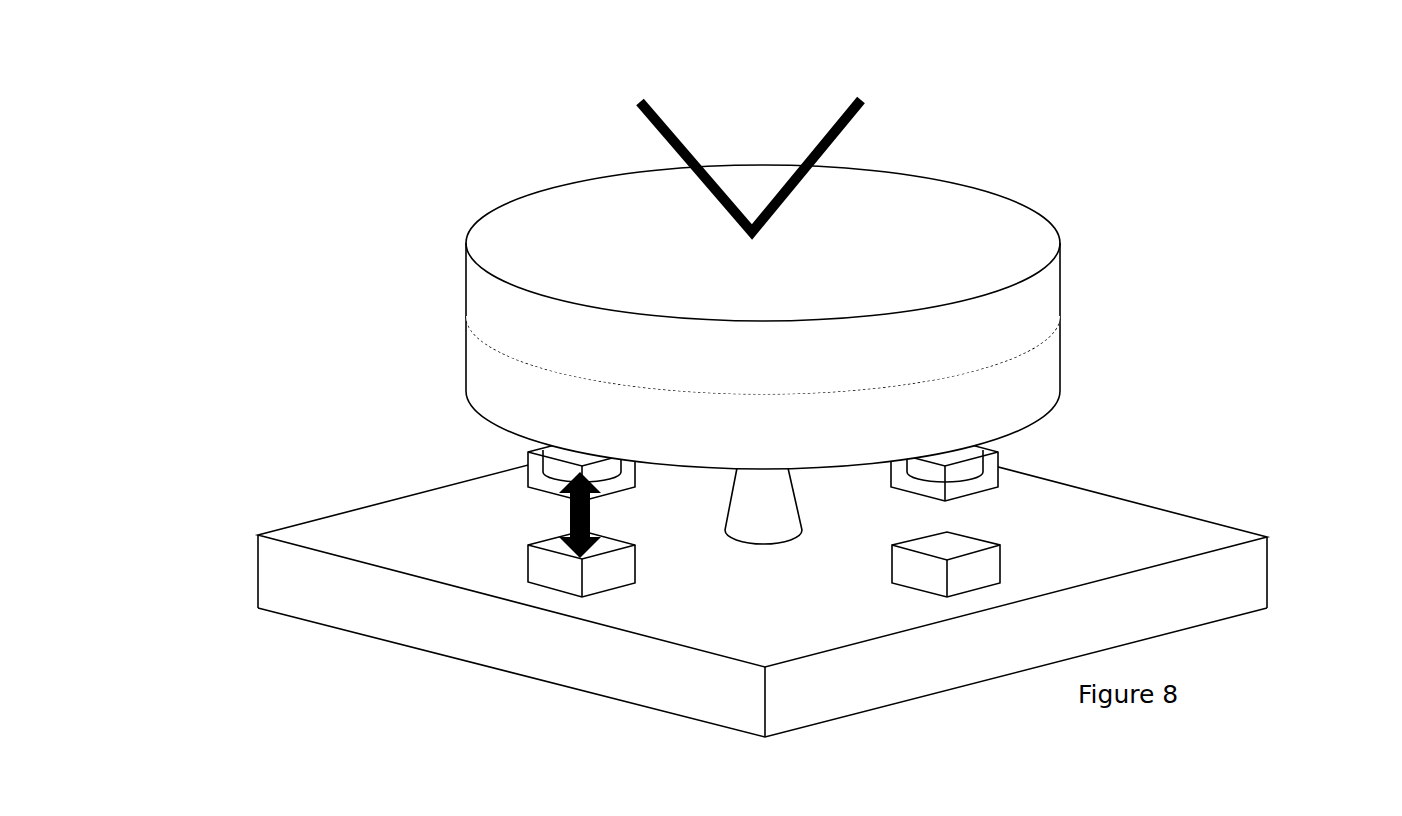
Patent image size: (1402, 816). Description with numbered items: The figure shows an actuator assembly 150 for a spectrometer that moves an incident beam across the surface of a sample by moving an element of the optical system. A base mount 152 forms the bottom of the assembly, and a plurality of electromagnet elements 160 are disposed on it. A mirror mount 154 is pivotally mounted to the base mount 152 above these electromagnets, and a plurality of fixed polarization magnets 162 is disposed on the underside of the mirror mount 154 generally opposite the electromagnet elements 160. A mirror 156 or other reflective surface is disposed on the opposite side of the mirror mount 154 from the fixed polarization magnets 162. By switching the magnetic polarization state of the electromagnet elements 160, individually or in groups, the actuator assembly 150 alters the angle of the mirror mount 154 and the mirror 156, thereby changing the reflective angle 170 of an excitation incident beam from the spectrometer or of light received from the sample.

The actuator assembly 150 is at (738, 395).
The base mount 152 is at (235, 544).
The mirror mount 154 is at (1044, 369).
The mirror 156 is at (982, 227).
The electromagnet elements 160 is at (990, 578).
The fixed polarization magnets 162 is at (986, 463).
The reflective angle 170 is at (619, 106).